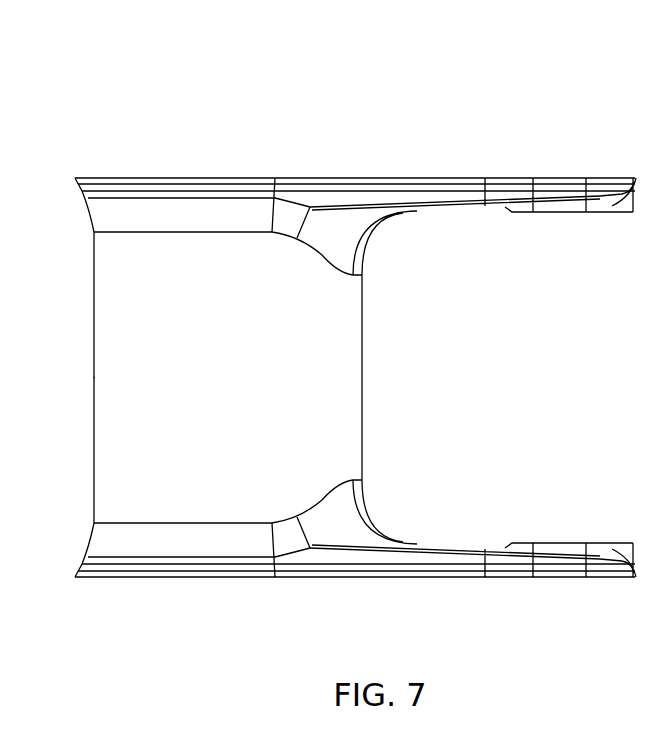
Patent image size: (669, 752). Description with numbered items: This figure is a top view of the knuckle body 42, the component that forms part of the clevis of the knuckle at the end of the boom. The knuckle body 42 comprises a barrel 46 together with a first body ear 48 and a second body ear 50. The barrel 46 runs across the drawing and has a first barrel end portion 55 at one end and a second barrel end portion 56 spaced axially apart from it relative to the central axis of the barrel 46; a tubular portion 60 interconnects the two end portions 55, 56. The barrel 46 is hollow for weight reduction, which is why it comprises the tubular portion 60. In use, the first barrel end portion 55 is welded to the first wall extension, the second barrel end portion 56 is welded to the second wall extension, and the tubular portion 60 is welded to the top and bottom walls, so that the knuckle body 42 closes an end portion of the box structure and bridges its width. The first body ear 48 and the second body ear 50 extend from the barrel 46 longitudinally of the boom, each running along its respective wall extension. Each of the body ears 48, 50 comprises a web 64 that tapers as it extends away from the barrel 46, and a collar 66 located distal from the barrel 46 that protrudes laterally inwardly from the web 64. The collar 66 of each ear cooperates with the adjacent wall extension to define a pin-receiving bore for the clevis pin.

The knuckle body 42 is at (158, 106).
The second barrel end portion 56 is at (86, 178).
The first barrel end portion 55 is at (103, 577).
The web 64 is at (432, 178).
The second body ear 50 is at (450, 205).
The first body ear 48 is at (458, 548).
The barrel 46 is at (343, 387).
The tubular portion 60 is at (343, 434).
The collar 66 is at (625, 215).